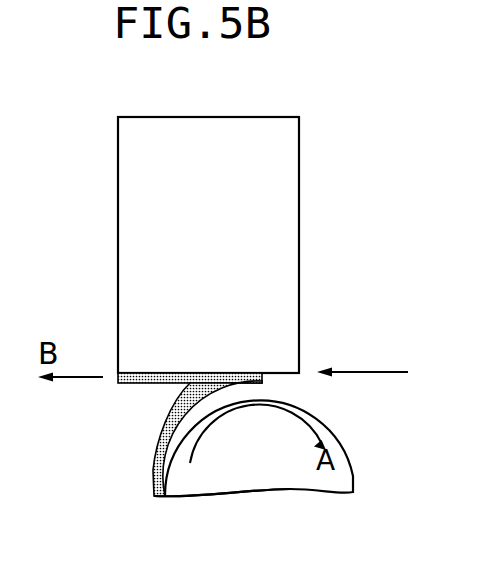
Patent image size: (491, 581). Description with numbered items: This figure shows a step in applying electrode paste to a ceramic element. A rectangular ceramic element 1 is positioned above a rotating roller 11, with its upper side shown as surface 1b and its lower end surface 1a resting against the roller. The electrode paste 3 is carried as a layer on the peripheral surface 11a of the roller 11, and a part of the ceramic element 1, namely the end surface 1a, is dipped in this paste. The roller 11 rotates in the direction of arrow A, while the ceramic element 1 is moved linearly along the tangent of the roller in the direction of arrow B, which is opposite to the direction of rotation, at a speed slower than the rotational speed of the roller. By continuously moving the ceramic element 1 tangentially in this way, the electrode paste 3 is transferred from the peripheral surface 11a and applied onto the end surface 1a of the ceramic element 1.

The ceramic element 1 is at (299, 238).
The end surface 1a is at (152, 388).
The upper surface of member 1 1b is at (200, 116).
The electrode paste 3 is at (183, 373).
The roller 11 is at (365, 457).
The peripheral surface 11a is at (152, 487).